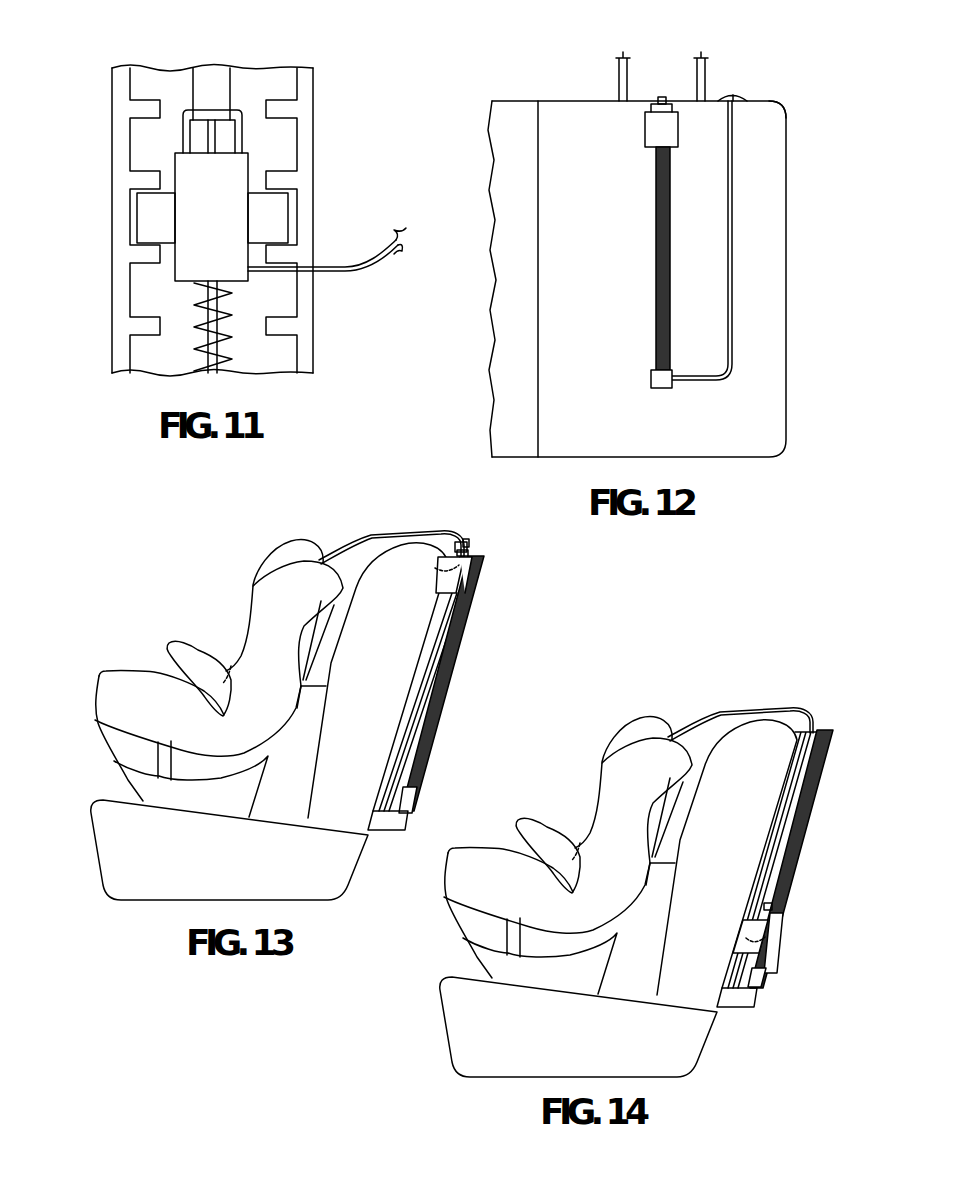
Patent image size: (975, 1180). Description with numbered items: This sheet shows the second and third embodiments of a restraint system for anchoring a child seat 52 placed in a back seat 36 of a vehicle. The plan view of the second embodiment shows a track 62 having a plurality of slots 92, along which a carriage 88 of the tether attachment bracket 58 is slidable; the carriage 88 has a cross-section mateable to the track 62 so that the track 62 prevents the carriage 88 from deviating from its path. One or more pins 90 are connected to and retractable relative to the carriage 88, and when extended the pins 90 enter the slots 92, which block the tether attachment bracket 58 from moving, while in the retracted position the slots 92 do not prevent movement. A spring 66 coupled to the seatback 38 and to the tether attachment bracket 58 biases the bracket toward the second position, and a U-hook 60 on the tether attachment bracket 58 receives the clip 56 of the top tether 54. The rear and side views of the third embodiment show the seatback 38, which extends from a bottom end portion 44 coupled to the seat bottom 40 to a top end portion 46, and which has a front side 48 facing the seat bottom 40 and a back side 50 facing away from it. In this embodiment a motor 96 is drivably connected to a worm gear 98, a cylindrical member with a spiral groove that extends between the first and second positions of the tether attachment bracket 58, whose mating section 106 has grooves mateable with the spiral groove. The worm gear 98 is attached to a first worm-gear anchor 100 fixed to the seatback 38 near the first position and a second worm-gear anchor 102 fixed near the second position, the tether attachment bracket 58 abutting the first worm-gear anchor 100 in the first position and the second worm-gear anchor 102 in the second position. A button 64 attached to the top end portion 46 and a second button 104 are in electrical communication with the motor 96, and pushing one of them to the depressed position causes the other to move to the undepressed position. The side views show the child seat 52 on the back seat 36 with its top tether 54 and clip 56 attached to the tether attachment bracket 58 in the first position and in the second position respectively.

In FIG. 12, the back seat 36 is at (786, 338).
In FIG. 13, the back seat 36 is at (229, 874).
In FIG. 14, the back seat 36 is at (510, 1080).
In FIG. 12, the seatback 38 is at (786, 223).
In FIG. 13, the seatback 38 is at (441, 702).
In FIG. 14, the seatback 38 is at (787, 800).
In FIG. 13, the seat bottom 40 is at (211, 874).
In FIG. 14, the seat bottom 40 is at (564, 1050).
In FIG. 12, the bottom end portion 44 is at (782, 447).
In FIG. 13, the bottom end portion 44 is at (387, 852).
In FIG. 14, the bottom end portion 44 is at (725, 1000).
In FIG. 12, the top end portion 46 is at (780, 107).
In FIG. 13, the top end portion 46 is at (469, 683).
In FIG. 14, the top end portion 46 is at (798, 819).
In FIG. 13, the front side 48 is at (265, 624).
In FIG. 14, the front side 48 is at (602, 763).
In FIG. 12, the back side 50 is at (572, 264).
In FIG. 13, the back side 50 is at (405, 680).
In FIG. 14, the back side 50 is at (778, 825).
In FIG. 13, the child seat 52 is at (198, 701).
In FIG. 14, the child seat 52 is at (480, 843).
In FIG. 13, the top tether 54 is at (390, 513).
In FIG. 14, the top tether 54 is at (715, 712).
In FIG. 11, the clip 56 is at (231, 88).
In FIG. 12, the clip 56 is at (660, 97).
In FIG. 13, the clip 56 is at (496, 528).
In FIG. 14, the clip 56 is at (783, 908).
In FIG. 11, the tether attachment bracket 58 is at (252, 161).
In FIG. 12, the tether attachment bracket 58 is at (645, 126).
In FIG. 13, the tether attachment bracket 58 is at (503, 588).
In FIG. 14, the tether attachment bracket 58 is at (783, 937).
In FIG. 11, the U-hook 60 is at (244, 134).
In FIG. 12, the U-hook 60 is at (673, 105).
In FIG. 13, the U-hook 60 is at (497, 550).
In FIG. 14, the U-hook 60 is at (783, 917).
In FIG. 11, the track 62 is at (214, 213).
In FIG. 13, the track 62 is at (460, 636).
In FIG. 14, the track 62 is at (800, 778).
In FIG. 12, the button 64 is at (723, 96).
In FIG. 11, the spring 66 is at (230, 348).
In FIG. 11, the carriage 88 is at (252, 184).
In FIG. 11, the pin 90 is at (291, 212).
In FIG. 11, the slots 92 is at (303, 115).
In FIG. 12, the motor 96 is at (651, 377).
In FIG. 13, the motor 96 is at (429, 830).
In FIG. 14, the motor 96 is at (787, 1011).
In FIG. 12, the worm gear 98 is at (656, 295).
In FIG. 13, the worm gear 98 is at (449, 683).
In FIG. 14, the worm gear 98 is at (800, 862).
In FIG. 12, the first worm-gear anchor 100 is at (645, 105).
In FIG. 13, the first worm-gear anchor 100 is at (447, 516).
In FIG. 14, the first worm-gear anchor 100 is at (822, 728).
In FIG. 12, the second worm-gear anchor 102 is at (656, 365).
In FIG. 13, the second worm-gear anchor 102 is at (429, 791).
In FIG. 14, the second worm-gear anchor 102 is at (755, 973).
In FIG. 12, the second button 104 is at (738, 96).
In FIG. 13, the mating section 106 is at (421, 570).
In FIG. 14, the mating section 106 is at (747, 940).